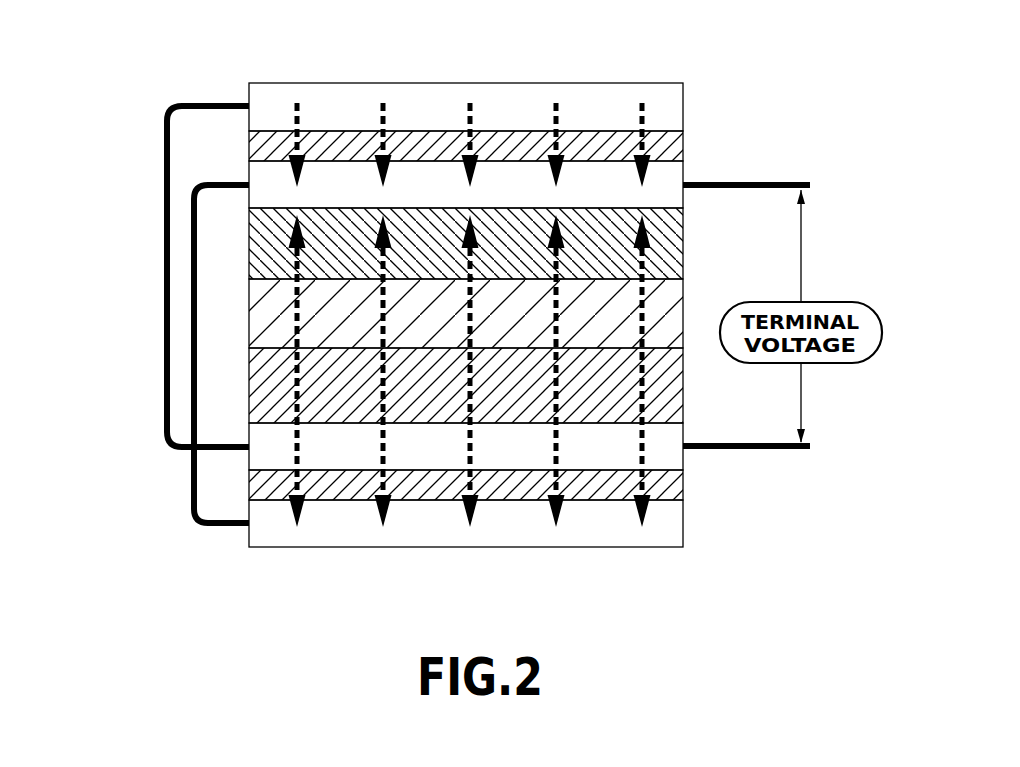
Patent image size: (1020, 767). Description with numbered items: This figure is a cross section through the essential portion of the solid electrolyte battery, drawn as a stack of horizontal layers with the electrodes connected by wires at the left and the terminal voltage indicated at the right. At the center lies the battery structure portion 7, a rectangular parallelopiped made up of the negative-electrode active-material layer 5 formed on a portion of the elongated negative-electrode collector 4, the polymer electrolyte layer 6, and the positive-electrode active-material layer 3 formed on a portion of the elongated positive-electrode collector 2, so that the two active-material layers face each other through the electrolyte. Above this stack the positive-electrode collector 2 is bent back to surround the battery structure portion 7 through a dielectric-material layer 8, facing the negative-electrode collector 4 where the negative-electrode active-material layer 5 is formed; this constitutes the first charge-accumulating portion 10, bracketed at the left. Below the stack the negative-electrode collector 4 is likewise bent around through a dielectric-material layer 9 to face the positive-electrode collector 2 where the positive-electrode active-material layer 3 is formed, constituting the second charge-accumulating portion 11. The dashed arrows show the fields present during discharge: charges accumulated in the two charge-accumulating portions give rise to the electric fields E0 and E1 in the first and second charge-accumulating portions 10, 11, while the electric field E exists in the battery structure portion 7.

The positive-electrode collector 2 is at (672, 105).
The positive-electrode active-material layer 3 is at (672, 382).
The negative-electrode collector 4 is at (672, 175).
The negative-electrode active-material layer 5 is at (672, 237).
The polymer electrolyte layer 6 is at (672, 308).
The battery structure portion 7 is at (128, 163).
The dielectric-material layer 8 is at (672, 148).
The dielectric-material layer 9 is at (672, 487).
The first charge-accumulating portion 10 is at (128, 85).
The second charge-accumulating portion 11 is at (128, 428).
The electric field E is at (672, 290).
The electric field E0 is at (468, 118).
The electric field E1 is at (482, 508).